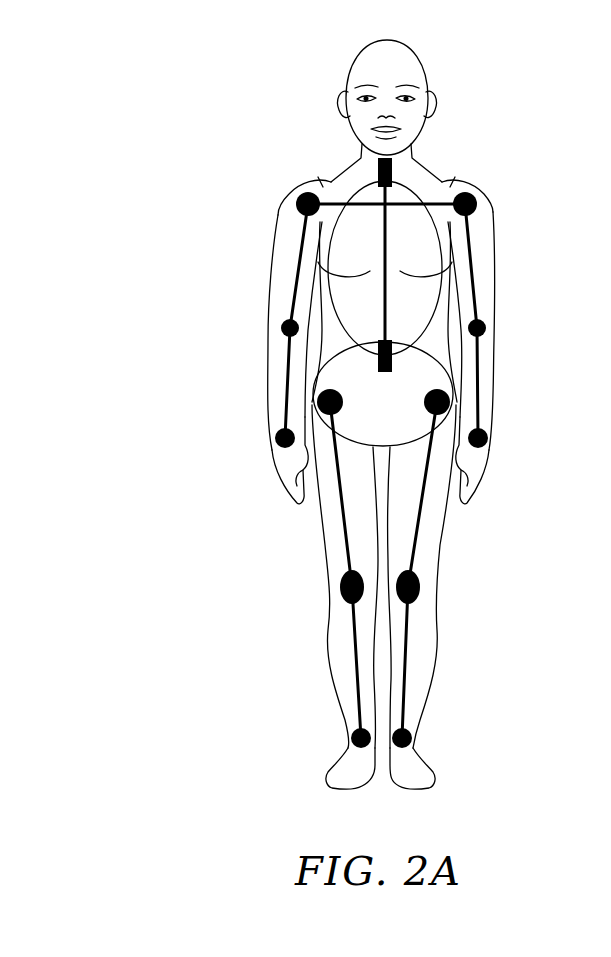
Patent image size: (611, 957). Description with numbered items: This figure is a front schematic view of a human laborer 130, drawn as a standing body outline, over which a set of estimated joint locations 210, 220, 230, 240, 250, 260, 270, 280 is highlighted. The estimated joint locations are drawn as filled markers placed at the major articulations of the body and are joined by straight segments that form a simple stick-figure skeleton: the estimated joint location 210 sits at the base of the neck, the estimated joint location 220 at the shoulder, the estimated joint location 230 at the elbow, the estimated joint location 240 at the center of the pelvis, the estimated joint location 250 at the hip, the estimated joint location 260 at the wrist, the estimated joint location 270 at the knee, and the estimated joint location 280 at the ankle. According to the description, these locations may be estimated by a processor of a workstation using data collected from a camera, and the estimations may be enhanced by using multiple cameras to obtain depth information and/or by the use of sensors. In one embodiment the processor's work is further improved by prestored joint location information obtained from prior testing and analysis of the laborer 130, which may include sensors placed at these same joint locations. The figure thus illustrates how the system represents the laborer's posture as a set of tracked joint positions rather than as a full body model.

The human laborer 130 is at (210, 74).
The estimated joint location 210 is at (393, 172).
The estimated joint location 220 is at (480, 197).
The estimated joint location 230 is at (483, 322).
The estimated joint location 240 is at (394, 364).
The estimated joint location 250 is at (450, 400).
The estimated joint location 260 is at (487, 437).
The estimated joint location 270 is at (420, 583).
The estimated joint location 280 is at (412, 737).